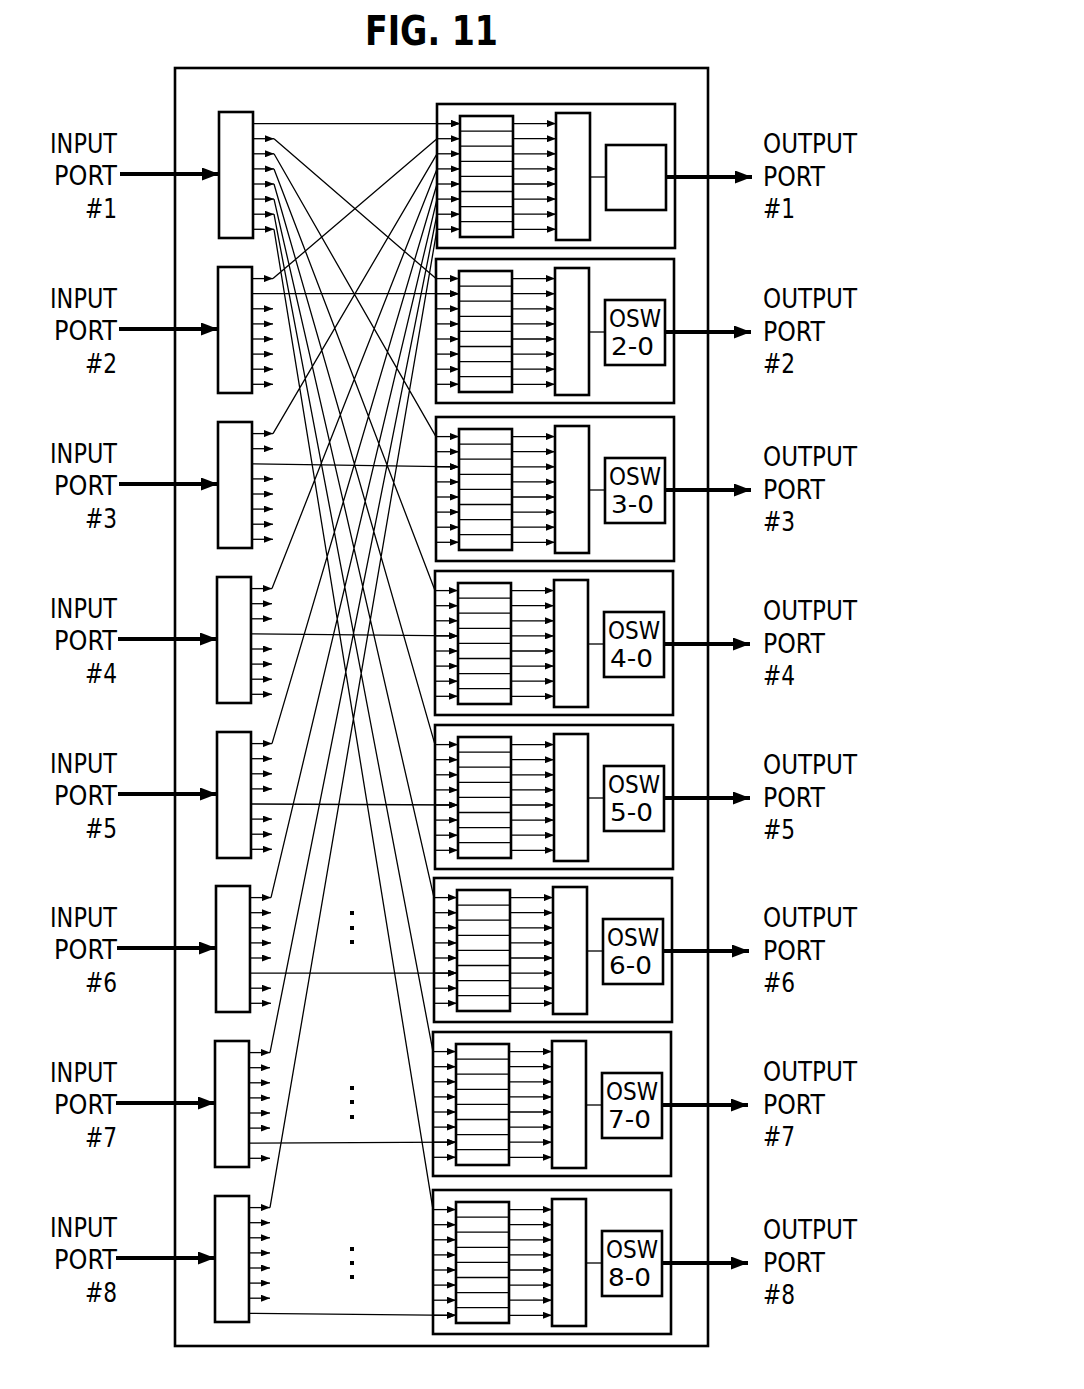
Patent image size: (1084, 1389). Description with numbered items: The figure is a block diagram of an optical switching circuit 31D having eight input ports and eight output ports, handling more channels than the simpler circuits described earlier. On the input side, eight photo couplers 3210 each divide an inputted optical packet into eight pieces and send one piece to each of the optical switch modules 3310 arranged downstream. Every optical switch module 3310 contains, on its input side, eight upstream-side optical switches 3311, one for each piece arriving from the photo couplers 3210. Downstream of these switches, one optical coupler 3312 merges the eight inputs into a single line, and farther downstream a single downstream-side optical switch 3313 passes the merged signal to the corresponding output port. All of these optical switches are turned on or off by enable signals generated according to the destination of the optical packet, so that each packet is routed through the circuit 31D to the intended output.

The photo coupler 3210 is at (235, 101).
The optical switching circuit 31D is at (584, 68).
The optical switch module 3310 is at (609, 132).
The optical switch 3311 is at (481, 144).
The optical coupler 3312 is at (596, 121).
The optical switch 3313 is at (652, 145).